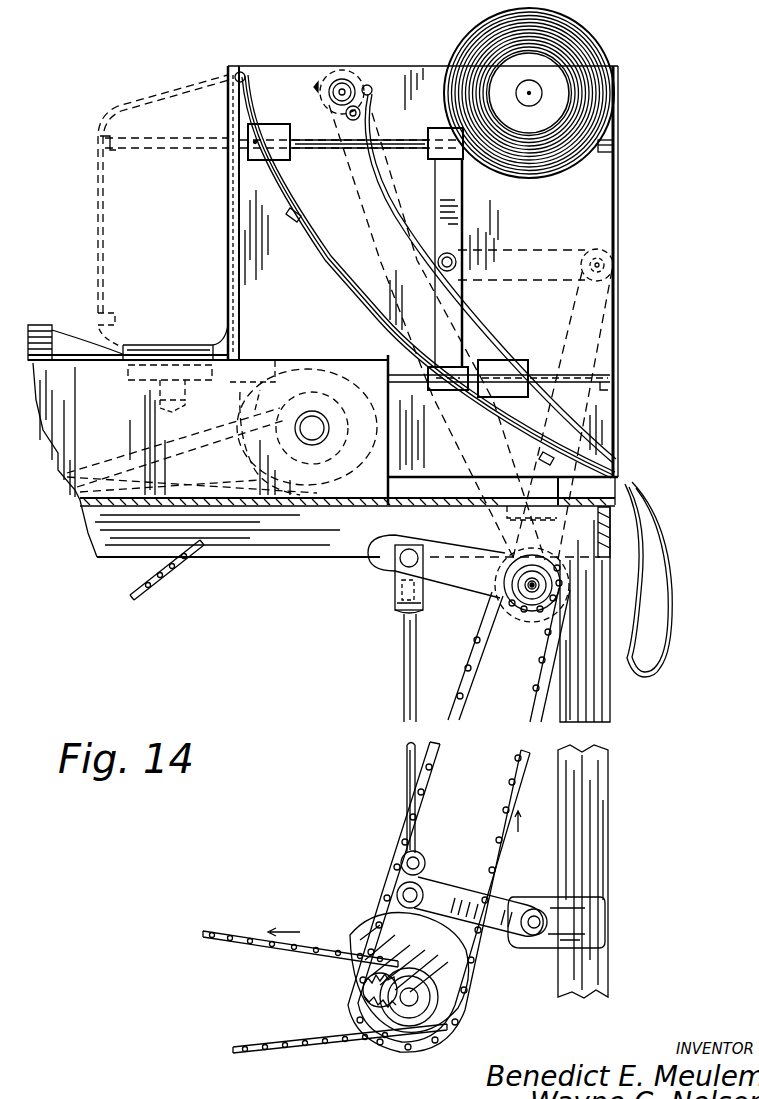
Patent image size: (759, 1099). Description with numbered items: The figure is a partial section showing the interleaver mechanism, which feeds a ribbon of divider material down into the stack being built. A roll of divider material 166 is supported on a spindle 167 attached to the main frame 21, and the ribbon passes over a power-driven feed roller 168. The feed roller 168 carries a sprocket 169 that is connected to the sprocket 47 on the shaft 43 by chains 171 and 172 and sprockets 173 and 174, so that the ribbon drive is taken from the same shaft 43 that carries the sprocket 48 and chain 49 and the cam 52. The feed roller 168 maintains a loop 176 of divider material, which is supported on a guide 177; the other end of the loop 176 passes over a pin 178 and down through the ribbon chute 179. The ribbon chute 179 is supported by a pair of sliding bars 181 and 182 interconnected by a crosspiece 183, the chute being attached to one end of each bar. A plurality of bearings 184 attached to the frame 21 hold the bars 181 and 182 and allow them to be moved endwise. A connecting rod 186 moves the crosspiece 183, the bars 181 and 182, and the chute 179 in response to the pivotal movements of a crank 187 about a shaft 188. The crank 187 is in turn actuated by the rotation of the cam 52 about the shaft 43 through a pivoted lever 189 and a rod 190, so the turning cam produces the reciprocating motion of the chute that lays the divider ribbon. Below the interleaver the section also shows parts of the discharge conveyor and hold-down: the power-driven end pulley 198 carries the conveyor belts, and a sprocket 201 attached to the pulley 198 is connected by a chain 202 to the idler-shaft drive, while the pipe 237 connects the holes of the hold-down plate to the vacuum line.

The main frame 21 is at (588, 800).
The shaft 43 is at (408, 1003).
The sprocket 47 is at (438, 1033).
The sprocket 48 is at (366, 1007).
The chain 49 is at (252, 944).
The cam 52 is at (355, 935).
The roll of divider material 166 is at (605, 105).
The spindle 167 is at (538, 90).
The feed roller 168 is at (346, 90).
The sprocket 169 is at (337, 68).
The chain 171 is at (396, 270).
The chain 172 is at (513, 775).
The sprocket 173 is at (560, 592).
The sprocket 174 is at (493, 600).
The loop 176 is at (660, 540).
The guide 177 is at (328, 262).
The pin 178 is at (241, 72).
The ribbon chute 179 is at (228, 228).
The sliding bar 181 is at (612, 150).
The sliding bar 182 is at (608, 388).
The crosspiece 183 is at (462, 205).
The bearings 184 is at (272, 124).
The connecting rod 186 is at (600, 250).
The crank 187 is at (612, 338).
The shaft 188 is at (532, 600).
The pivoted lever 189 is at (456, 895).
The rod 190 is at (403, 698).
The end pulley 198 is at (312, 505).
The sprocket 201 is at (258, 447).
The chain 202 is at (160, 586).
The pipe 237 is at (150, 402).